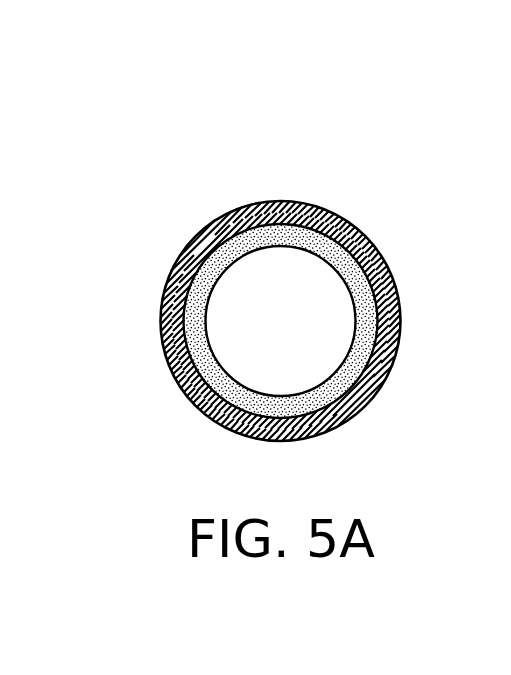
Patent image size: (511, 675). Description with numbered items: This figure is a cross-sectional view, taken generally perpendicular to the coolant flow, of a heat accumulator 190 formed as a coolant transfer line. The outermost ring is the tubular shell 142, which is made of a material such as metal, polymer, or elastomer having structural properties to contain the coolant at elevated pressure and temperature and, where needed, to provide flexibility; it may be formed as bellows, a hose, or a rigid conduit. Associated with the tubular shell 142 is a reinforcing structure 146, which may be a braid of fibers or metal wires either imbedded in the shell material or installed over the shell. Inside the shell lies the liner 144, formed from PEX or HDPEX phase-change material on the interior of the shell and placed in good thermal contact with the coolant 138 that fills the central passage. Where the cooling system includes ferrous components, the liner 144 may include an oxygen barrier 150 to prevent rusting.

The heat accumulator 190 is at (280, 278).
The tubular shell 142 is at (237, 207).
The oxygen barrier 150 is at (280, 291).
The reinforcing structure 146 is at (353, 233).
The liner 144 is at (200, 392).
The coolant 138 is at (302, 352).